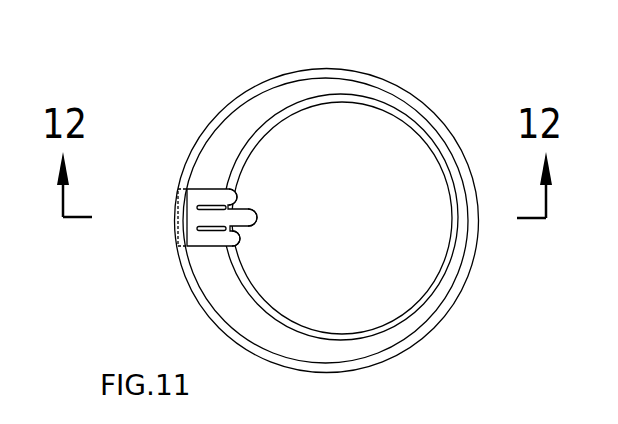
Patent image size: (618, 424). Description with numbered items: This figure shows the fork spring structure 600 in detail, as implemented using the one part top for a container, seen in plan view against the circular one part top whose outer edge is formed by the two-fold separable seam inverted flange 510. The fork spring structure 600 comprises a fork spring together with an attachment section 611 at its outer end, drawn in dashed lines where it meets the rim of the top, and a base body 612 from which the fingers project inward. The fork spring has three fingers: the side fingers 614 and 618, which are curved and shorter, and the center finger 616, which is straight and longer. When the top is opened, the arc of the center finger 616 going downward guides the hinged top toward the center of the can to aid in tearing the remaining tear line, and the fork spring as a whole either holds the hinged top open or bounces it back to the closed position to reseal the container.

The fork spring structure 600 is at (200, 62).
The two-fold separable seam inverted flange 510 is at (370, 72).
The attachment section 611 is at (178, 212).
The connector body 612 is at (197, 190).
The side finger 614 is at (242, 244).
The center finger 616 is at (258, 223).
The side finger 618 is at (238, 190).